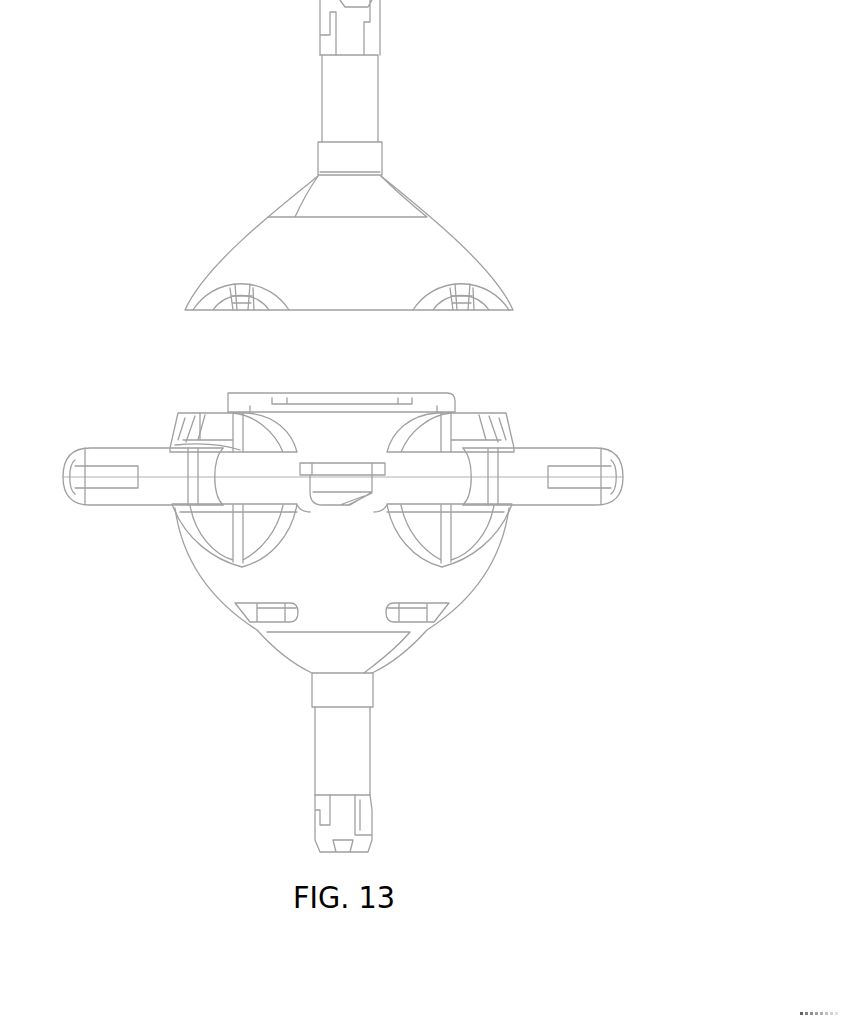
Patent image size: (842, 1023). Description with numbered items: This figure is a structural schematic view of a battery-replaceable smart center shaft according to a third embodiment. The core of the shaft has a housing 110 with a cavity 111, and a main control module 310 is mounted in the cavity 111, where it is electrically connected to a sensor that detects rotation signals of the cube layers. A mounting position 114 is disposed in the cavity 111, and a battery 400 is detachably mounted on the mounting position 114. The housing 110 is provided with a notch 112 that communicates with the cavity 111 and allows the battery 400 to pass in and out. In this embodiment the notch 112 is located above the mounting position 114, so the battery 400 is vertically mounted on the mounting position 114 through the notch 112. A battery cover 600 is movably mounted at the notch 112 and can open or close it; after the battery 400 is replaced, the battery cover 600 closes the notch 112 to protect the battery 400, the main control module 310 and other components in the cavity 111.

The battery cover 600 is at (433, 252).
The battery 400 is at (407, 397).
The notch 112 is at (191, 369).
The mounting position 114 is at (230, 412).
The main control module 310 is at (348, 482).
The housing 110 is at (337, 610).
The cavity 111 is at (304, 525).